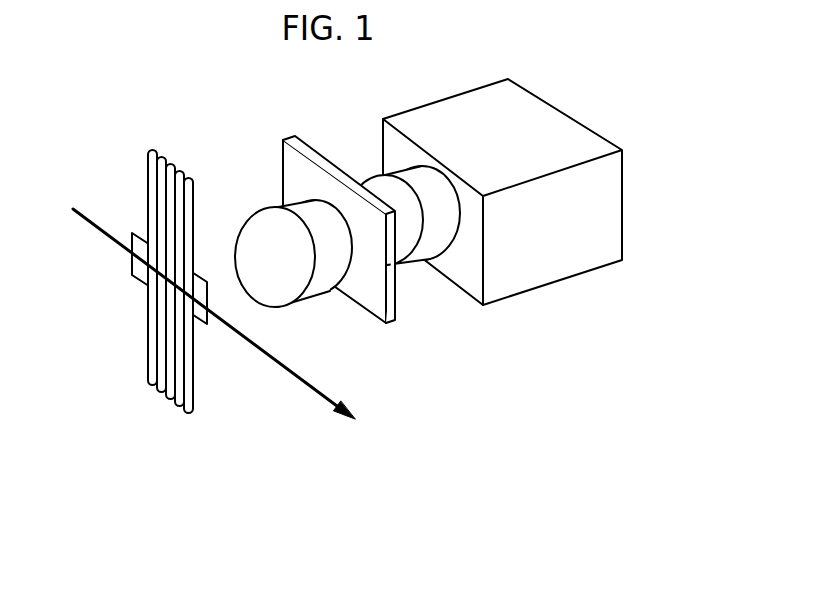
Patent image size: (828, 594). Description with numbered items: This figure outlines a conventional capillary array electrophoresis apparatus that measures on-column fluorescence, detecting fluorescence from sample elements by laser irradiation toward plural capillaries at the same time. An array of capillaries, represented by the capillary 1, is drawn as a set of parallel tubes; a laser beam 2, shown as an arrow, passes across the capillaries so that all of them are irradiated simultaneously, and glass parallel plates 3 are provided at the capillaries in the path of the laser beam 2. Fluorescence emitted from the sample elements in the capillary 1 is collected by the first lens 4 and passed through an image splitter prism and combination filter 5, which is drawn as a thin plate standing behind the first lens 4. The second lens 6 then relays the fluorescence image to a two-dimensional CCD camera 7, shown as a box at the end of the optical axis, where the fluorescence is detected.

The capillary 1 is at (148, 353).
The laser beam 2 is at (283, 366).
The glass parallel plates 3 is at (132, 267).
The first lens 4 is at (255, 214).
The image splitter prism and combination filter 5 is at (290, 138).
The second lens 6 is at (417, 262).
The two-dimensional CCD camera 7 is at (553, 267).